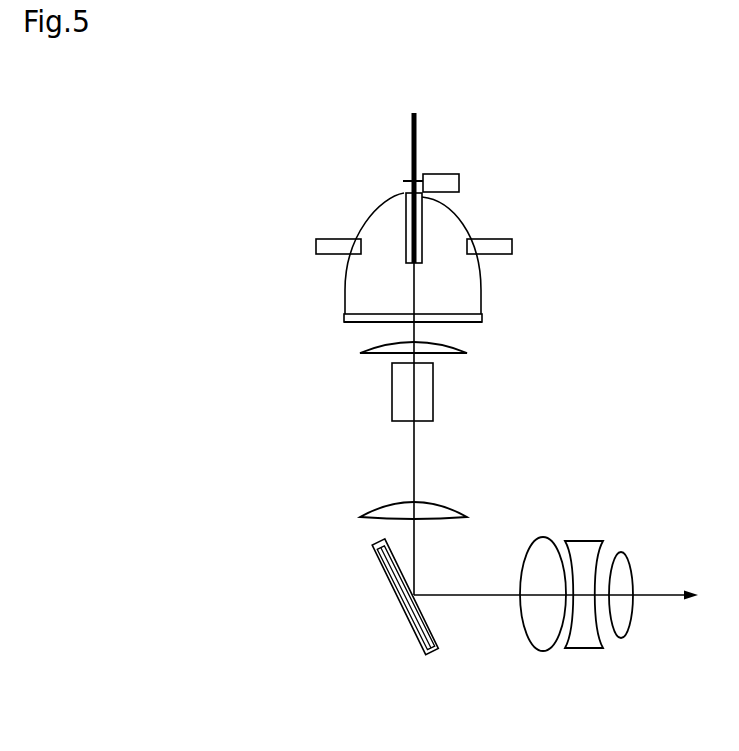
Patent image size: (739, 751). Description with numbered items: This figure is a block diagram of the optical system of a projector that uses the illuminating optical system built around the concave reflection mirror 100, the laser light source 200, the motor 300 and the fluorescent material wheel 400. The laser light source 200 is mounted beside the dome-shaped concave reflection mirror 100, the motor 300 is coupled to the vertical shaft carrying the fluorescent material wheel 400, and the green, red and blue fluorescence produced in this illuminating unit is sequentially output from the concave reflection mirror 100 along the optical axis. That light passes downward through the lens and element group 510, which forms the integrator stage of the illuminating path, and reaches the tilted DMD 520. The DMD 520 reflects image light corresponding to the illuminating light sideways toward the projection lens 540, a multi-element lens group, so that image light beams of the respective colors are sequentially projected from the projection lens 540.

The concave reflection mirror 100 is at (346, 289).
The laser light source 200 is at (467, 238).
The motor 300 is at (460, 183).
The fluorescent material wheel 400 is at (417, 140).
The objective optical unit 510 is at (357, 333).
The DMD 520 is at (372, 551).
The projection lens 540 is at (645, 530).